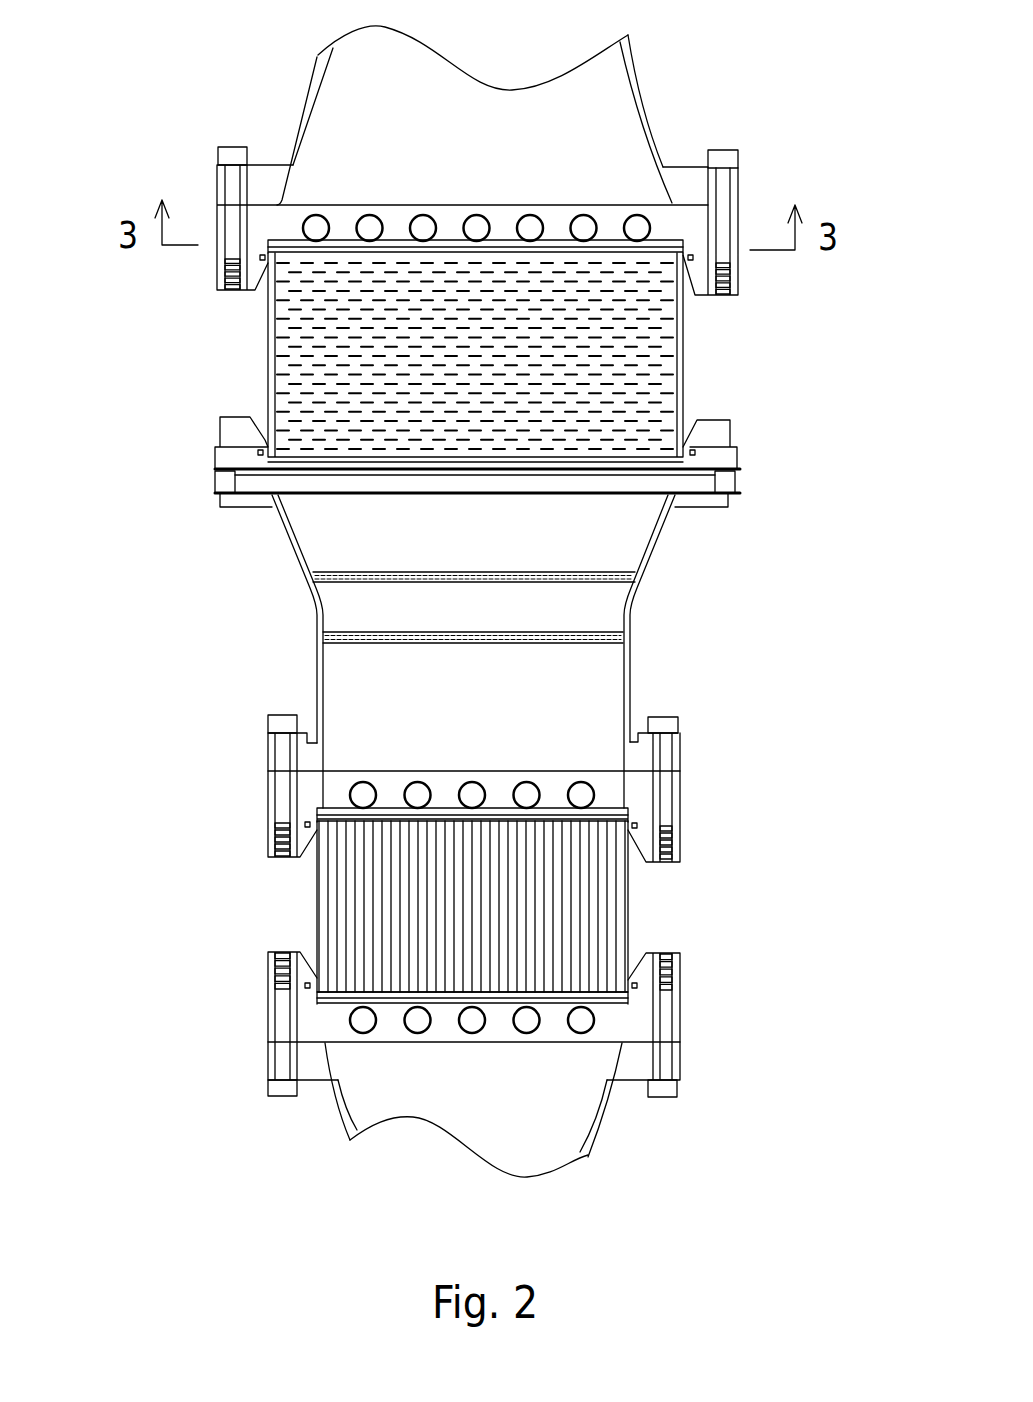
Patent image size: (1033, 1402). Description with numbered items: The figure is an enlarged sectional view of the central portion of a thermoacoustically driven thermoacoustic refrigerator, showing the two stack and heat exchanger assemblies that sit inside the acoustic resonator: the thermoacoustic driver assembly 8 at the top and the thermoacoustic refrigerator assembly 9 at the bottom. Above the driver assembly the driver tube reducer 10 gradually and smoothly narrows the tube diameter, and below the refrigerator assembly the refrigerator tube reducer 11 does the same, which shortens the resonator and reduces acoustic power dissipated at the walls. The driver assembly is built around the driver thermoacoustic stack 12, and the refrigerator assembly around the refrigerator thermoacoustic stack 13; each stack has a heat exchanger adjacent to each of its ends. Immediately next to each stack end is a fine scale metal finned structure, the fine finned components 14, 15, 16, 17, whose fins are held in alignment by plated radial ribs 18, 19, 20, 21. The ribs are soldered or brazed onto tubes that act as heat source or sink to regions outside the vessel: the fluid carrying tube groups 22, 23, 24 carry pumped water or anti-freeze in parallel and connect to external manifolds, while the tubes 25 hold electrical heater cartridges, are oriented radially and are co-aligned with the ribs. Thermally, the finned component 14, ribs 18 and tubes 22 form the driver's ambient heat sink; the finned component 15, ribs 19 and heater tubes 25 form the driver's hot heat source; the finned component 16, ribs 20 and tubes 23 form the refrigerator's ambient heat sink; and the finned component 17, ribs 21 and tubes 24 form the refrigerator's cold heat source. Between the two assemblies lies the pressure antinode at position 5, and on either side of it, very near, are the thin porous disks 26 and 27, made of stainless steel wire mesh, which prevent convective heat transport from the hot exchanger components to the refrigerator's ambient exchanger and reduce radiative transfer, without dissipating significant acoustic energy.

The pressure antinode position 5 is at (402, 608).
The thermoacoustic driver assembly 8 is at (730, 419).
The thermoacoustic refrigerator assembly 9 is at (680, 1000).
The driver tube reducer 10 is at (647, 97).
The refrigerator tube reducer 11 is at (597, 1135).
The driver thermoacoustic stack 12 is at (620, 340).
The refrigerator thermoacoustic stack 13 is at (600, 922).
The fine finned component 14 is at (615, 247).
The fine finned component 15 is at (300, 455).
The fine finned component 16 is at (340, 812).
The fine finned component 17 is at (338, 1000).
The radial ribs 18 is at (443, 240).
The radial ribs 19 is at (320, 462).
The radial ribs 20 is at (338, 807).
The radial ribs 21 is at (388, 1006).
The fluid carrying tubes 22 is at (308, 215).
The fluid carrying tubes 23 is at (596, 794).
The fluid carrying tubes 24 is at (467, 1033).
The heater cartridge tubes 25 is at (630, 495).
The thin porous disk 26 is at (310, 572).
The thin porous disk 27 is at (338, 637).